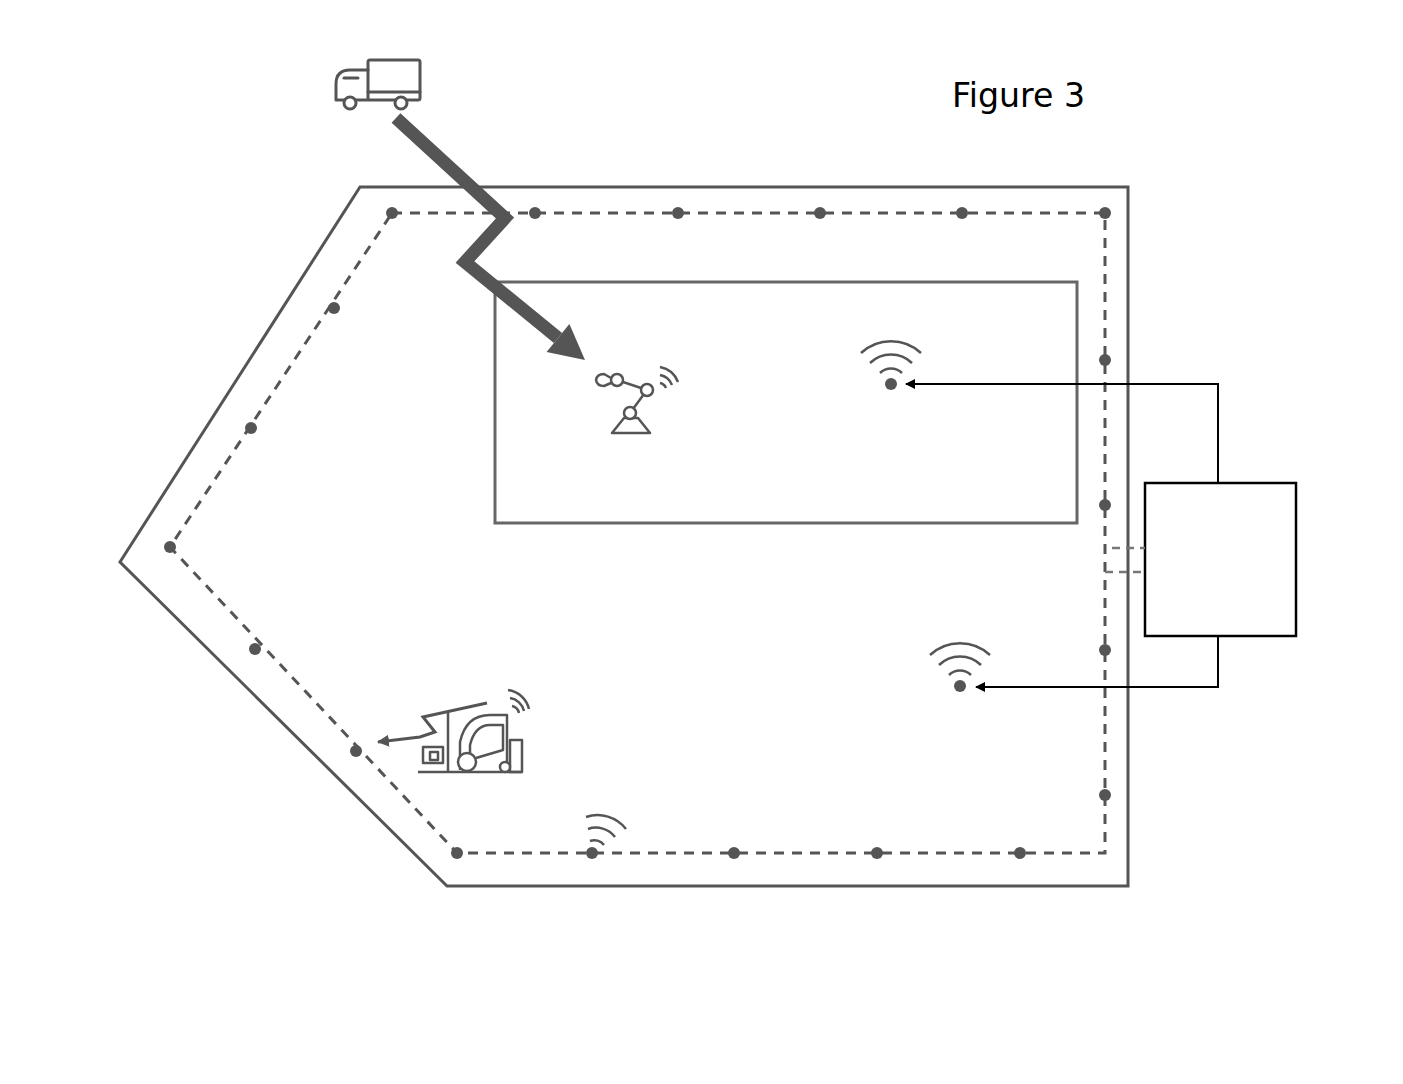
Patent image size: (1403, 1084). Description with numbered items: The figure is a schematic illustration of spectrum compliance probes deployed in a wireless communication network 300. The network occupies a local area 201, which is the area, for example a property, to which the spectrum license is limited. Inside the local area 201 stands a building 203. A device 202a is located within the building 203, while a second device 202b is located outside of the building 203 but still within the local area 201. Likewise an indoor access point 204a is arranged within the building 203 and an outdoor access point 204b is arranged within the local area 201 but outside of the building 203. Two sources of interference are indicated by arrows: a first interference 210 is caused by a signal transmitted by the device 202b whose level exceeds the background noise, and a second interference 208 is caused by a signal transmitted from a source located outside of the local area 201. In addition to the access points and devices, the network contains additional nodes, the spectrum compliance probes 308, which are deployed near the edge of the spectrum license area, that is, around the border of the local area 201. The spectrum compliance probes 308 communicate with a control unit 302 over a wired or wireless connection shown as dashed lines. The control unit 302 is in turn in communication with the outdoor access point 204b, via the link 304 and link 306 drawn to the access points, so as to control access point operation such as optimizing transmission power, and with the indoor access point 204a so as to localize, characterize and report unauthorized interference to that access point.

The wireless communication network 300 is at (268, 213).
The local area 201 is at (927, 887).
The building 203 is at (950, 523).
The device 202a is at (640, 412).
The device 202b is at (520, 738).
The indoor access point 204a is at (890, 393).
The outdoor access point 204b is at (963, 690).
The second interference 208 is at (442, 146).
The first interference 210 is at (443, 708).
The control unit 302 is at (1293, 533).
The communication link 304 is at (1218, 383).
The communication link 306 is at (1220, 662).
The spectrum compliance probes 308 is at (596, 858).